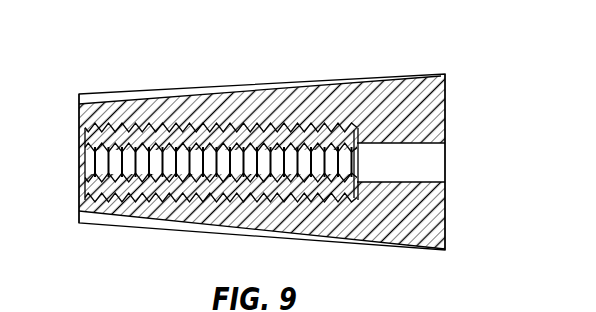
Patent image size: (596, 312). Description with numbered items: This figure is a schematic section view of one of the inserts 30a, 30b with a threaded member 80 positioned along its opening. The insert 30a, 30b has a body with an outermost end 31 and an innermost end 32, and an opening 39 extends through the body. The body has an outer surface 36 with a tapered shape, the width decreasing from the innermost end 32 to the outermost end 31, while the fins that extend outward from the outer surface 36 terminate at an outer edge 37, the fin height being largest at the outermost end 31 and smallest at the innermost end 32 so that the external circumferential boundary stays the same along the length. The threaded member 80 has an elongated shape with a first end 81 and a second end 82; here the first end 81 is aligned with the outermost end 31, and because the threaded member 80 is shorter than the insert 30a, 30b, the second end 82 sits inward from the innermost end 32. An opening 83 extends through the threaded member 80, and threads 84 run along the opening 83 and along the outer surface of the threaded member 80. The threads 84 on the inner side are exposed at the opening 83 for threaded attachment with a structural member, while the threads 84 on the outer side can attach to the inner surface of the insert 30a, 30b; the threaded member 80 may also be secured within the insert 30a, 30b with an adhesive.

The insert 30a is at (306, 129).
The insert 30b is at (402, 56).
The outermost end 31 is at (77, 117).
The innermost end 32 is at (447, 111).
The outer surface 36 is at (204, 112).
The outer edge 37 is at (188, 90).
The opening 39 is at (423, 167).
The threaded member 80 is at (220, 159).
The first end 81 is at (76, 196).
The second end 82 is at (357, 188).
The opening 83 is at (270, 150).
The threads 84 is at (153, 112).